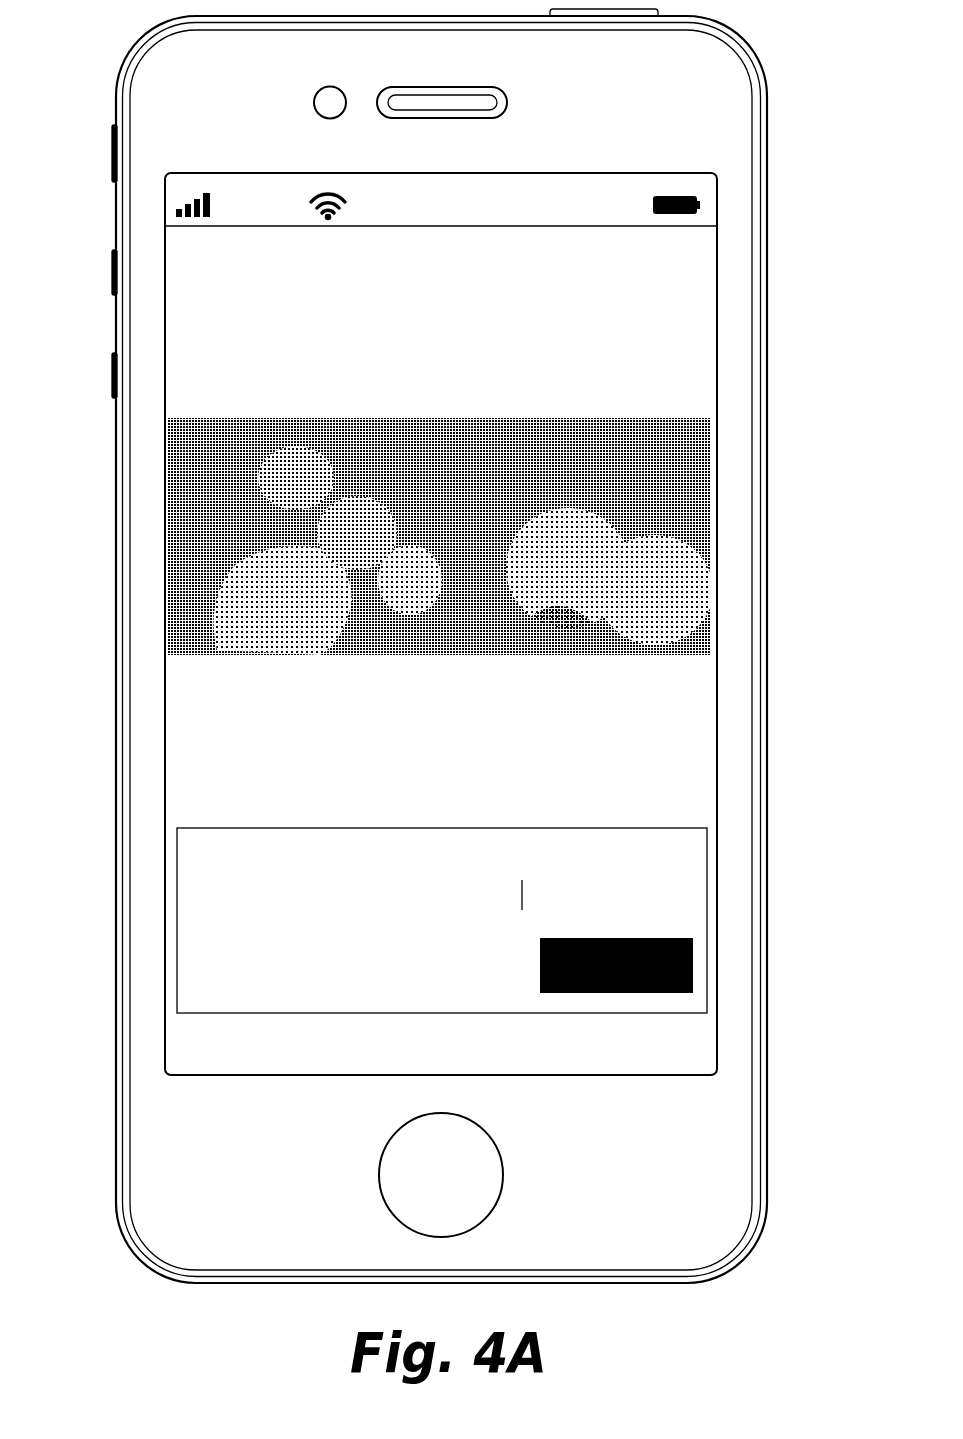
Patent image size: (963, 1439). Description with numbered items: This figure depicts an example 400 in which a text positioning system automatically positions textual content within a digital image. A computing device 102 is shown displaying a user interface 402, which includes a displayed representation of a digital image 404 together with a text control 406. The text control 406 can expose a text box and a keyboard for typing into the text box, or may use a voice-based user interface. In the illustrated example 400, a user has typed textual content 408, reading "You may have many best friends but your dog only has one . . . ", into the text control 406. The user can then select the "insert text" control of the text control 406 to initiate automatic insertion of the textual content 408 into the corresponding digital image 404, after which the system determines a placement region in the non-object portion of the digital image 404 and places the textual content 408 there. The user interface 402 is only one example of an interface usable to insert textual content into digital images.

The example 400 is at (115, 52).
The computing device 102 is at (654, 109).
The user interface 402 is at (694, 275).
The digital image 404 is at (692, 468).
The text control 406 is at (707, 907).
The textual content 408 is at (610, 850).